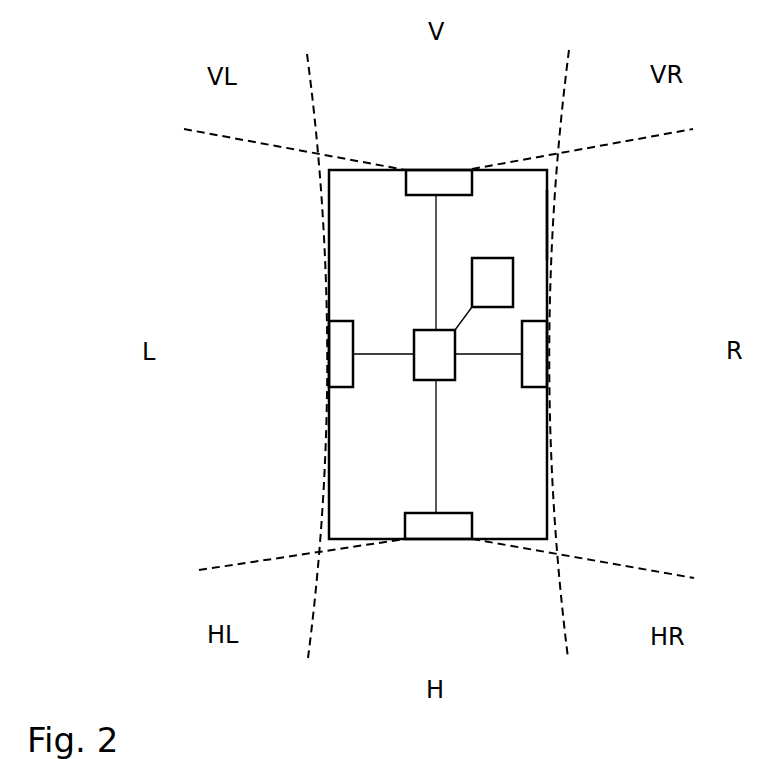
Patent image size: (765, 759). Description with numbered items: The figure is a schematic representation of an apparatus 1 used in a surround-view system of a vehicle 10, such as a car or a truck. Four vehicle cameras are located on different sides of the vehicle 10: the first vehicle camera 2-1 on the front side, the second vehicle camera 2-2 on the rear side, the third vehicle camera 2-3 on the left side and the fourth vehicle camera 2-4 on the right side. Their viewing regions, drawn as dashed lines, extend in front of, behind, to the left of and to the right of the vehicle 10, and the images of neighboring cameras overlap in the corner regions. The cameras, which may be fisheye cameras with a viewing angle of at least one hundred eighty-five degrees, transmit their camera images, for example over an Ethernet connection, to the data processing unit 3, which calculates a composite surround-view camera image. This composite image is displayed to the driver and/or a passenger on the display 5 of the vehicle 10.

The apparatus 1 is at (285, 245).
The vehicle 10 is at (548, 224).
The first vehicle camera 2-1 is at (463, 182).
The second vehicle camera 2-2 is at (453, 521).
The third vehicle camera 2-3 is at (340, 350).
The fourth vehicle camera 2-4 is at (530, 373).
The data processing unit 3 is at (419, 371).
The display 5 is at (496, 283).